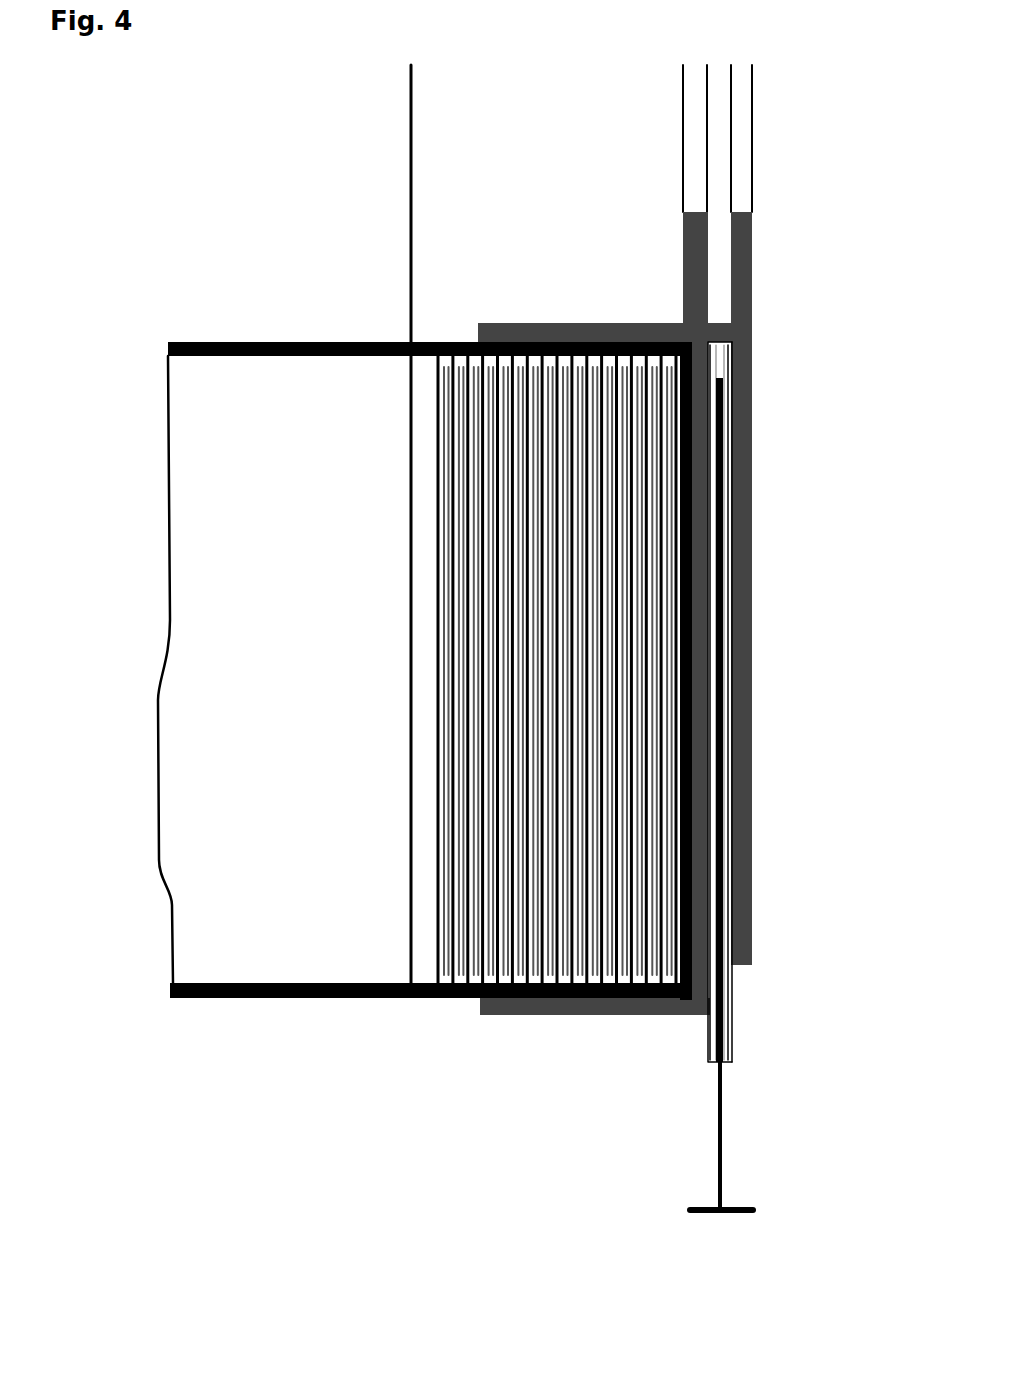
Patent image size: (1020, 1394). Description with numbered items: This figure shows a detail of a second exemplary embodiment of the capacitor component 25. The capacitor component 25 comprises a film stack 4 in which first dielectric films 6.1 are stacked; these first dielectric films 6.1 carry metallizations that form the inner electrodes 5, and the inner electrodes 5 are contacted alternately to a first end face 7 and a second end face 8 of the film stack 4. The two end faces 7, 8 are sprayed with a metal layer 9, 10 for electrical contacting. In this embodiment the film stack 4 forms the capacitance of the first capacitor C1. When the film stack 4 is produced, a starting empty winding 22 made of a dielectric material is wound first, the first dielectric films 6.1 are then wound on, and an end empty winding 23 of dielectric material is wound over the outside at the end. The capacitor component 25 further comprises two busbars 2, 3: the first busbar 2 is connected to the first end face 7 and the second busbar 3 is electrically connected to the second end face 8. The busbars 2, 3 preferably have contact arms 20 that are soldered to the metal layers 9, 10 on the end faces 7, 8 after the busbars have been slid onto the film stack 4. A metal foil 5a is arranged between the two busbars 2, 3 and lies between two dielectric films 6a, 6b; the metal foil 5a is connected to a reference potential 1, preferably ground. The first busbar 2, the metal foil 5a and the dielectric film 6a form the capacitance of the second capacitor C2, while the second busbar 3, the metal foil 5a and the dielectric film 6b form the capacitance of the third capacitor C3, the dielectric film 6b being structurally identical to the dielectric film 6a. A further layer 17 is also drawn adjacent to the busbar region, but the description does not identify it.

The reference potential 1 is at (697, 1214).
The first busbar 2 is at (745, 295).
The second busbar 3 is at (700, 212).
The film stack 4 is at (392, 515).
The inner electrodes 5 is at (447, 848).
The metal foil 5a is at (735, 1062).
The first dielectric films 6.1 is at (455, 720).
The dielectric film 6a is at (708, 1050).
The dielectric film 6b is at (735, 988).
The first end face 7 is at (475, 585).
The second end face 8 is at (481, 1047).
The metal layer 9 is at (386, 343).
The metal layer 10 is at (236, 982).
The conductive layer 17 is at (693, 713).
The contact arms 20 is at (660, 323).
The starting empty winding 22 is at (432, 600).
The end empty winding 23 is at (667, 600).
The capacitor component 25 is at (318, 208).
The first capacitor C1 is at (655, 323).
The second capacitor C2 is at (702, 998).
The third capacitor C3 is at (740, 912).